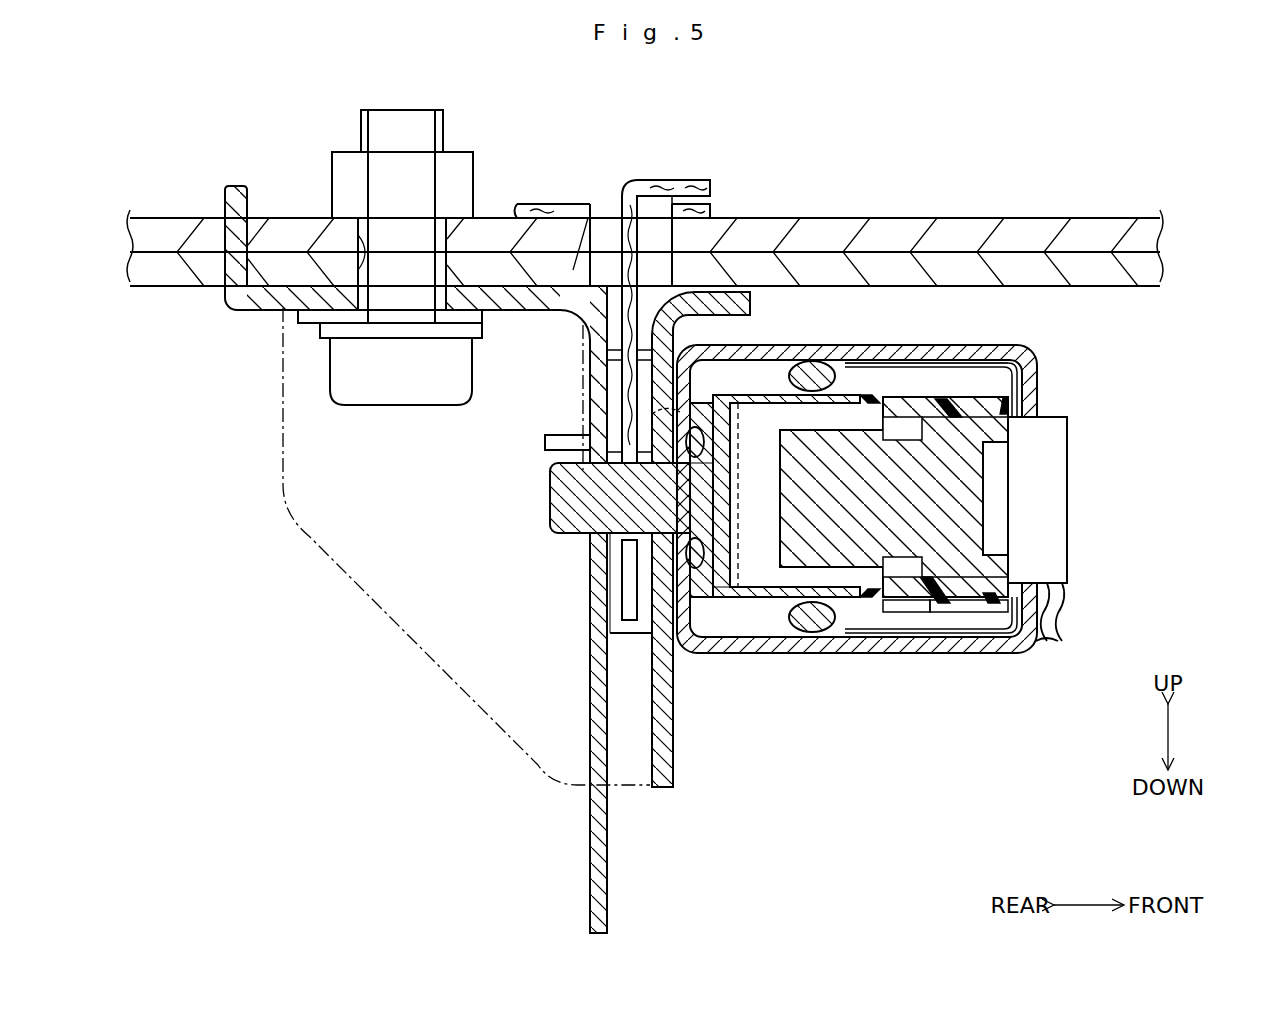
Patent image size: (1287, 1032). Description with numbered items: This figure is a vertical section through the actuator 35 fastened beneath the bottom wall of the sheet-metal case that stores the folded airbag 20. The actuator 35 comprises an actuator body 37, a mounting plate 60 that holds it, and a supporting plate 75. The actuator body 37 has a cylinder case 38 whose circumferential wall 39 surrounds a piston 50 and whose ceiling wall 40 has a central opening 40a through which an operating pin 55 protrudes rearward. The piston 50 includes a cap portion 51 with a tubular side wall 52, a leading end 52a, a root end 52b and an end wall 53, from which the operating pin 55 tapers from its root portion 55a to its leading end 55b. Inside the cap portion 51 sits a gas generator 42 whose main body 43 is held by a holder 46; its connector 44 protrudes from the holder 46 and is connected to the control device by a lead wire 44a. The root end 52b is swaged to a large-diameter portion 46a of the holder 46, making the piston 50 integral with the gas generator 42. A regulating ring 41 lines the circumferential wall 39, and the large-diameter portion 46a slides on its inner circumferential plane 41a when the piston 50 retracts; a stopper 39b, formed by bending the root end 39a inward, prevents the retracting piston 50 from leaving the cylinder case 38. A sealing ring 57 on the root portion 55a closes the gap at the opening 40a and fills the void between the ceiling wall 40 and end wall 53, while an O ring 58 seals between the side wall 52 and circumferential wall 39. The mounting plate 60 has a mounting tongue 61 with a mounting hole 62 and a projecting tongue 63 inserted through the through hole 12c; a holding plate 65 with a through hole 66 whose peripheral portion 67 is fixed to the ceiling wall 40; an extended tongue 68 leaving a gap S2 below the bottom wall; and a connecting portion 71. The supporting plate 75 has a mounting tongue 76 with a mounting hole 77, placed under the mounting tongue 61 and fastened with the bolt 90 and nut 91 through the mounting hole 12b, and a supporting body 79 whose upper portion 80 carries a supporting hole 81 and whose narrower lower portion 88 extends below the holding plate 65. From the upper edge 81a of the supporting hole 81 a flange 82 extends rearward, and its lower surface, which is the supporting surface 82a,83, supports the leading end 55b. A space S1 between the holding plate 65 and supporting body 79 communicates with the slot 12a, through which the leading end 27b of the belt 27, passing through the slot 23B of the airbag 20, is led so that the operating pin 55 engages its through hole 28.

The slot 12a is at (600, 230).
The mounting hole 12b is at (440, 232).
The through hole 12c is at (233, 312).
The airbag 20 is at (545, 210).
The belt 27 is at (660, 186).
The leading end of belt 27b is at (595, 683).
The slot 23B is at (657, 212).
The nut 91 is at (415, 135).
The mounting hole 62 is at (370, 265).
The projecting tongue 63 is at (238, 186).
The mounting tongue 61 is at (285, 300).
The mounting tongue 76 is at (318, 324).
The mounting hole 77 is at (435, 296).
The bolt 90 is at (357, 388).
The end wall 53 is at (667, 412).
The gap S2 is at (750, 284).
The flange 82 is at (560, 437).
The lower surface of flange / supporting surface 82a,83 is at (575, 447).
The peripheral portion 67 is at (655, 412).
The operating pin 55 is at (536, 520).
The root portion of operating pin 55a is at (742, 413).
The leading end of operating pin 55b is at (540, 500).
The upper edge of supporting hole 81a is at (560, 465).
The upper portion 80 is at (597, 617).
The supporting hole 81 is at (585, 548).
The opening 40a is at (640, 510).
The through hole 28 is at (665, 542).
The ceiling wall 40 is at (662, 700).
The holding plate 65 is at (664, 790).
The mounting plate 60 is at (664, 795).
The space S1 is at (623, 752).
The through hole 66 is at (628, 618).
The supporting plate 75 is at (574, 838).
The lower portion 88 is at (605, 895).
The supporting body 79 is at (588, 714).
The actuator 35 is at (488, 794).
The connecting portion 71 is at (315, 552).
The cylinder case 38 is at (1000, 338).
The actuator body 37 is at (1004, 660).
The circumferential wall 39 is at (845, 645).
The root end 39a is at (1023, 362).
The stopper 39b is at (1030, 384).
The side wall 52 is at (772, 396).
The leading end of side wall 52a is at (735, 600).
The root end of side wall 52b is at (888, 392).
The regulating ring 41 is at (940, 606).
The inner circumferential plane 41a is at (965, 372).
The gas generator 42 is at (1160, 385).
The main body 43 is at (990, 421).
The connector 44 is at (1068, 462).
The lead wire 44a is at (1066, 610).
The extended tongue 68 is at (816, 360).
The sealing ring 58 is at (813, 634).
The cap portion 51 is at (864, 372).
The sealing ring 57 is at (702, 585).
The piston 50 is at (772, 616).
The holder 46 is at (958, 612).
The large-diameter portion 46a is at (897, 622).